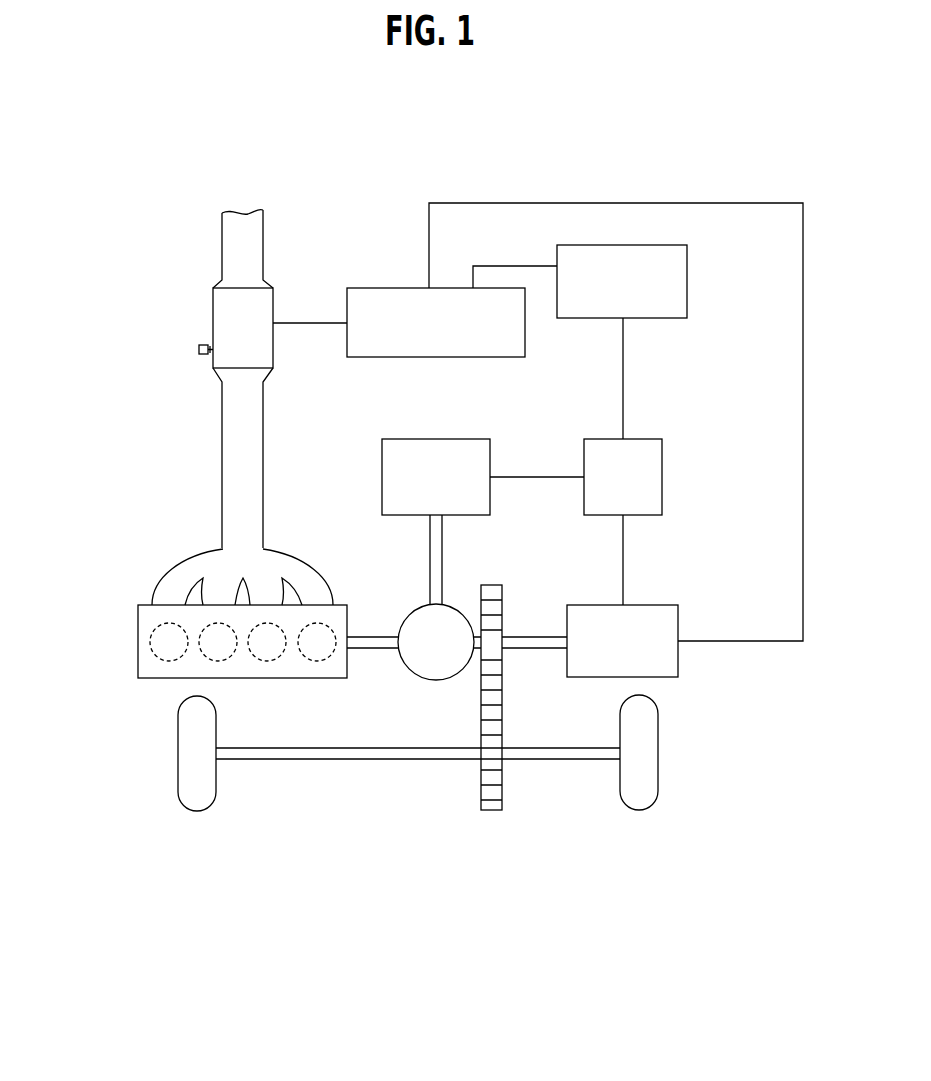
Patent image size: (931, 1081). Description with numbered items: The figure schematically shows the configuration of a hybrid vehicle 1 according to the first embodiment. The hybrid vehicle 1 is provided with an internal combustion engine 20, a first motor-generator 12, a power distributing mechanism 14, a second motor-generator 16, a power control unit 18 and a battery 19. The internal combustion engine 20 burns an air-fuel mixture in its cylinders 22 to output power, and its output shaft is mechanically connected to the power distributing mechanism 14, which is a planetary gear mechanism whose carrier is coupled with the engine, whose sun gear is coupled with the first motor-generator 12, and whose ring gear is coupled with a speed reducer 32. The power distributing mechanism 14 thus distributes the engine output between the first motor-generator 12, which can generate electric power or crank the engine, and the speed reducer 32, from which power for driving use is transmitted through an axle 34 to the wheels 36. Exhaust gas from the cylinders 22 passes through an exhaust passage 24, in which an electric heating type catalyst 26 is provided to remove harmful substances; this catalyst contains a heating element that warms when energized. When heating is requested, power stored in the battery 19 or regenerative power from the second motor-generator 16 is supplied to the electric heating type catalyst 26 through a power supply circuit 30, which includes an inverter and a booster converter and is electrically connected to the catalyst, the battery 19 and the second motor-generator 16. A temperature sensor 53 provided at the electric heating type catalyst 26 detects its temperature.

The hybrid vehicle 1 is at (634, 174).
The first motor-generator 12 is at (382, 462).
The power distributing mechanism 14 is at (412, 610).
The second motor-generator 16 is at (662, 605).
The power control unit 18 is at (650, 439).
The battery 19 is at (637, 318).
The internal combustion engine 20 is at (138, 618).
The cylinders 22 is at (150, 645).
The exhaust passage 24 is at (222, 452).
The electric heating type catalyst 26 is at (213, 317).
The power supply circuit 30 is at (462, 357).
The speed reducer 32 is at (502, 780).
The axle 34 is at (363, 760).
The wheels 36 is at (198, 811).
The temperature sensor 53 is at (204, 356).